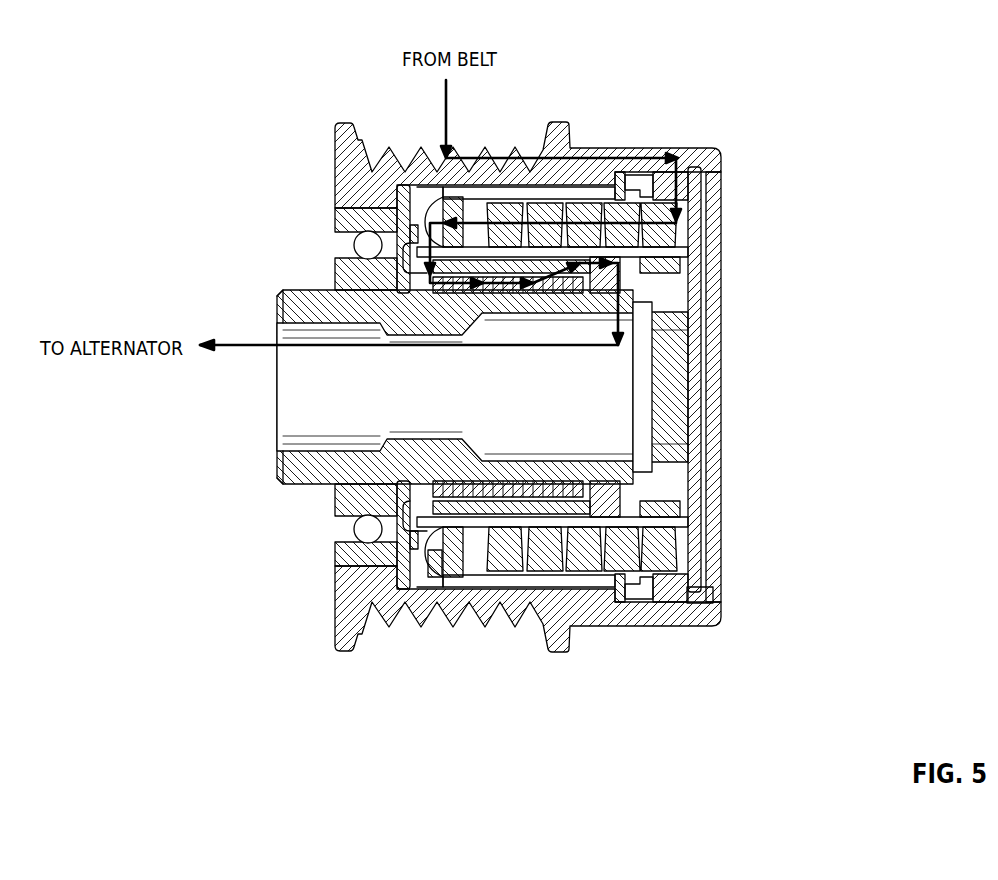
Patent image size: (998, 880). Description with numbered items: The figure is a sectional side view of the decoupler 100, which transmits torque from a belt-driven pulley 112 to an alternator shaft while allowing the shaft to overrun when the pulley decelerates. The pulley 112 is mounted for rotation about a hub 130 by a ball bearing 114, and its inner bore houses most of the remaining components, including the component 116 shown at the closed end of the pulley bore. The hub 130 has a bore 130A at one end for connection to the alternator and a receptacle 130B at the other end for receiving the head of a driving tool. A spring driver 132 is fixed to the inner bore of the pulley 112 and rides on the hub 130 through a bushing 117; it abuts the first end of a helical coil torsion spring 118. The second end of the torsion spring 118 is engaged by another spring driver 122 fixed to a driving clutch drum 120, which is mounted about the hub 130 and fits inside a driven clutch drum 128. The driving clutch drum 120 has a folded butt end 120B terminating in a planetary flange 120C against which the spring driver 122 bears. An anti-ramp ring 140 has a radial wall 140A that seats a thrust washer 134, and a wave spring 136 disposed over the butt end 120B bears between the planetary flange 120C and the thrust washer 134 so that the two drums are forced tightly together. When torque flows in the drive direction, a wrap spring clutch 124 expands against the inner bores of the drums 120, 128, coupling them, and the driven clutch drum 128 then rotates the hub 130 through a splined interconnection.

The decoupler 100 is at (722, 98).
The pulley 112 is at (350, 623).
The ball bearing 114 is at (350, 503).
The cover / end wall 116 is at (708, 298).
The bushing 117 is at (600, 505).
The helical coil torsion spring 118 is at (563, 572).
The driving clutch drum 120 is at (515, 467).
The folded butt end 120B is at (403, 520).
The planetary flange 120C is at (460, 567).
The spring driver 122 is at (450, 550).
The wrap spring clutch 124 is at (698, 397).
The driven clutch drum 128 is at (613, 510).
The hub 130 is at (481, 377).
The bore 130A is at (282, 432).
The receptacle 130B is at (690, 392).
The spring driver 132 is at (692, 588).
The thrust washer 134 is at (403, 562).
The wave spring 136 is at (427, 543).
The anti-ramp ring 140 is at (396, 503).
The radial wall 140A is at (403, 550).